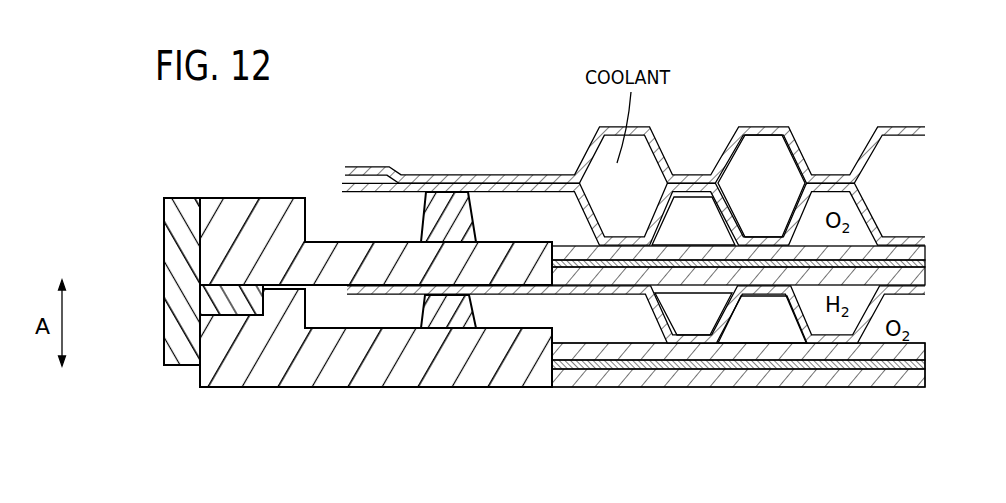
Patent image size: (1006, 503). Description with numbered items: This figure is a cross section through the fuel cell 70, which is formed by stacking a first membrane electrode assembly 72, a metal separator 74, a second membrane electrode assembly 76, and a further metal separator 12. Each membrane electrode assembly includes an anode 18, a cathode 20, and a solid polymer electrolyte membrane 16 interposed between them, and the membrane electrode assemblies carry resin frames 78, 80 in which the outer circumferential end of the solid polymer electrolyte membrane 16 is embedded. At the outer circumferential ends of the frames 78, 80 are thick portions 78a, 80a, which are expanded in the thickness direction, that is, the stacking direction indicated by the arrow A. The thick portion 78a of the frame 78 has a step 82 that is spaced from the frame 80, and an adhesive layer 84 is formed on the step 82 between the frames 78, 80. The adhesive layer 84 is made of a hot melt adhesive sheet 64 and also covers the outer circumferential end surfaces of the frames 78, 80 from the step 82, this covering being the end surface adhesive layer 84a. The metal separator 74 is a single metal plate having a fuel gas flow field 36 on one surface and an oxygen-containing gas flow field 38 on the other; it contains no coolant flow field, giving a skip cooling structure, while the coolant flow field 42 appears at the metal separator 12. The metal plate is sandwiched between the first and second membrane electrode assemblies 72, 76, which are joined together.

The fuel cell 70 is at (354, 99).
The metal separator 12 is at (573, 150).
The solid polymer electrolyte membrane 16 is at (927, 264).
The anode 18 is at (927, 243).
The cathode 20 is at (927, 281).
The fuel gas flow field 36 is at (693, 314).
The oxygen-containing gas flow field 38 is at (729, 270).
The coolant flow field 42 is at (761, 186).
The first membrane electrode assembly 72 is at (660, 404).
The metal separator 74 is at (634, 315).
The second membrane electrode assembly 76 is at (574, 233).
The frame 78 is at (441, 370).
The thick portion 78a is at (302, 306).
The frame 80 is at (344, 252).
The thick portion 80a is at (284, 211).
The step 82 is at (207, 307).
The adhesive layer 84 is at (219, 320).
The hot melt adhesive sheet 64 is at (182, 281).
The end surface adhesive layer 84a is at (172, 249).